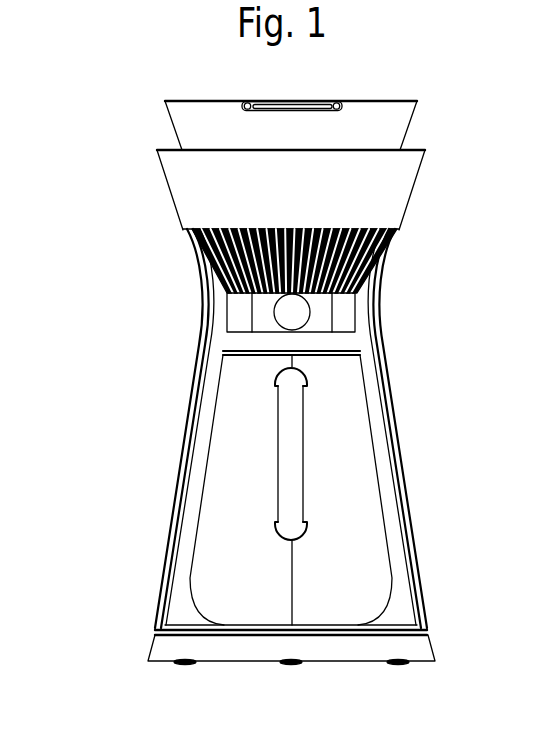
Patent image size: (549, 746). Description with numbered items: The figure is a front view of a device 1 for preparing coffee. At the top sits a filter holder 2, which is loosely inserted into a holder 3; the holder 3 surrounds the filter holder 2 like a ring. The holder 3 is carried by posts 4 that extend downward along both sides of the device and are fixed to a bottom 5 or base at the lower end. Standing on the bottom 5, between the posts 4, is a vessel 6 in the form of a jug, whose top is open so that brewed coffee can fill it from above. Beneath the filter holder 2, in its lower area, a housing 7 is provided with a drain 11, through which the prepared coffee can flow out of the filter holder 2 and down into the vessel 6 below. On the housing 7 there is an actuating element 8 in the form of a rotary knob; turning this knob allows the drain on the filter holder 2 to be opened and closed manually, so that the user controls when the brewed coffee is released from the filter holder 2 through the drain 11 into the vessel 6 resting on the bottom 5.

The device for preparing coffee 1 is at (95, 445).
The filter holder 2 is at (187, 123).
The holder 3 is at (212, 188).
The posts 4 is at (187, 390).
The bottom 5 is at (395, 636).
The vessel 6 is at (252, 489).
The housing 7 is at (322, 309).
The actuating element 8 is at (298, 318).
The drain 11 is at (252, 338).